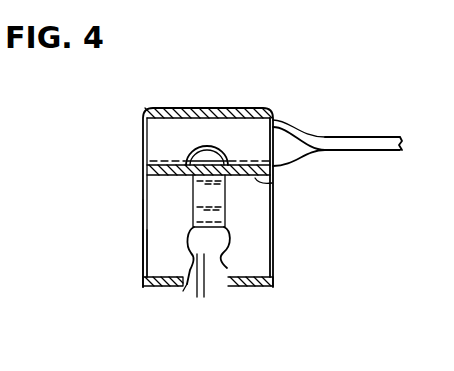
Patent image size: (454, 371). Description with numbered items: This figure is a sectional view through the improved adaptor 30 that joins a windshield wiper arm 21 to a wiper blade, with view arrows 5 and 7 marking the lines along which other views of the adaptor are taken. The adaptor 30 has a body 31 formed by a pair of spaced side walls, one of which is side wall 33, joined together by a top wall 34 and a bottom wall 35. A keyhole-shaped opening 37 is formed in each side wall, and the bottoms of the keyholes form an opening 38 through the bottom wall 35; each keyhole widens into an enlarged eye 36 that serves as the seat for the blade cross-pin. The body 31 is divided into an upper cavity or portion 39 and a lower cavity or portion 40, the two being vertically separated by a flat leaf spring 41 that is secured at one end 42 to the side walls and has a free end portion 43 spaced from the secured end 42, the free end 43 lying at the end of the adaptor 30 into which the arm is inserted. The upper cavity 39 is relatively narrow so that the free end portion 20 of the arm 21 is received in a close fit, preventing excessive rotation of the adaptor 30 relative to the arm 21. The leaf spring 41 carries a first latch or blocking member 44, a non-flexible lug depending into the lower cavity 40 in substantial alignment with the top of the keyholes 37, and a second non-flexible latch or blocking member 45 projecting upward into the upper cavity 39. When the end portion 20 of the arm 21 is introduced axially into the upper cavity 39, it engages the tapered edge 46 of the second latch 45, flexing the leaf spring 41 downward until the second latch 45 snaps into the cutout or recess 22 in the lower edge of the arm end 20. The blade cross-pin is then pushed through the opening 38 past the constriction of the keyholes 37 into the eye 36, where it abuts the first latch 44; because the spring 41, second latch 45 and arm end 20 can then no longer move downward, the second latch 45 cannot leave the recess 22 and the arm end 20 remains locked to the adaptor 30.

The section line arrow 5 is at (95, 157).
The section line arrow 7 is at (305, 216).
The free end portion 20 is at (150, 157).
The windshield wiper arm 21 is at (335, 130).
The cutout or recess 22 is at (207, 146).
The adaptor 30 is at (157, 104).
The body 31 is at (138, 266).
The side wall 33 is at (262, 251).
The top wall 34 is at (232, 160).
The bottom wall 35 is at (150, 294).
The enlarged eye 36 is at (200, 298).
The keyhole-shaped opening 37 is at (222, 250).
The opening 38 is at (183, 287).
The upper cavity or portion 39 is at (143, 134).
The lower cavity or portion 40 is at (145, 220).
The leaf spring 41 is at (145, 201).
The secured end 42 is at (148, 176).
The free end portion 43 is at (272, 183).
The first latch or blocking member 44 is at (145, 242).
The second latch or blocking member 45 is at (216, 150).
The tapered edge 46 is at (186, 160).